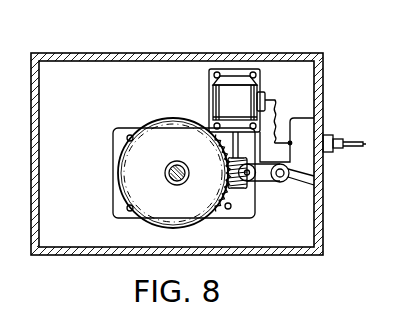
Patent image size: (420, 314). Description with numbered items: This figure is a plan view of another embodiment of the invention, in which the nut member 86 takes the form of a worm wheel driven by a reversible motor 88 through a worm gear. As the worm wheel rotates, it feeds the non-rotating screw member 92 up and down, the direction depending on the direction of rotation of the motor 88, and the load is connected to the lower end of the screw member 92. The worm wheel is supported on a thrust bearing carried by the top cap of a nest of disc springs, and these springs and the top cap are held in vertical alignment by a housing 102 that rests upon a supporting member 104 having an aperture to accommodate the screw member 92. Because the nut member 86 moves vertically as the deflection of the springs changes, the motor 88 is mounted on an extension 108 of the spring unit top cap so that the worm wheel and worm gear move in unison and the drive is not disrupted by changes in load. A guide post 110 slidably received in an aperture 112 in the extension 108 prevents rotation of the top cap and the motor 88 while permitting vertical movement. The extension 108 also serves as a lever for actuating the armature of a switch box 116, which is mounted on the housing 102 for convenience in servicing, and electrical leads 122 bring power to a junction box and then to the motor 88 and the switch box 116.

The supporting member 104 is at (72, 78).
The housing 102 is at (115, 142).
The nut member 86 is at (138, 183).
The screw member 92 is at (177, 161).
The motor 88 is at (228, 96).
The switch box 116 is at (249, 189).
The extension 108 is at (267, 190).
The guide post 110 is at (290, 177).
The aperture 112 is at (314, 190).
The electrical leads 122 is at (307, 129).